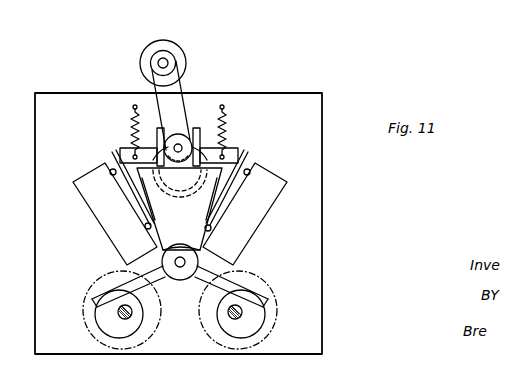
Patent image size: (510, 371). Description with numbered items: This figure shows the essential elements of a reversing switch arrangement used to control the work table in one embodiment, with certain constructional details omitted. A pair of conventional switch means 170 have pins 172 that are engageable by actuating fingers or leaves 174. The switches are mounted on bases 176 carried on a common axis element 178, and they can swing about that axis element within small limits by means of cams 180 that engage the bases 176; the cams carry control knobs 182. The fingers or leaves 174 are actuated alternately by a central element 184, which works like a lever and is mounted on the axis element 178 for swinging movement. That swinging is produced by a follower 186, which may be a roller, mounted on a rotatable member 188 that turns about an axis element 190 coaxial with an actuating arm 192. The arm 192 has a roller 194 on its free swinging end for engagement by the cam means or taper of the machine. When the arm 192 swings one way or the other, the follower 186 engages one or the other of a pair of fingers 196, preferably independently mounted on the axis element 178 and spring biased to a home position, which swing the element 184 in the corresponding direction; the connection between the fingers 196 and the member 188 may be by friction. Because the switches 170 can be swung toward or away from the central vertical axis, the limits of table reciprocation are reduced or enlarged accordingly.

The switch means 170 is at (97, 209).
The pins 172 is at (110, 172).
The actuating fingers or leaves 174 is at (112, 152).
The bases 176 is at (124, 272).
The axis element 178 is at (180, 270).
The cams 180 is at (101, 323).
The control knobs 182 is at (85, 298).
The central element 184 is at (157, 208).
The follower 186 is at (189, 136).
The rotatable member 188 is at (130, 150).
The axis element 190 is at (179, 164).
The actuating arm 192 is at (180, 86).
The roller 194 is at (175, 50).
The fingers 196 is at (158, 130).